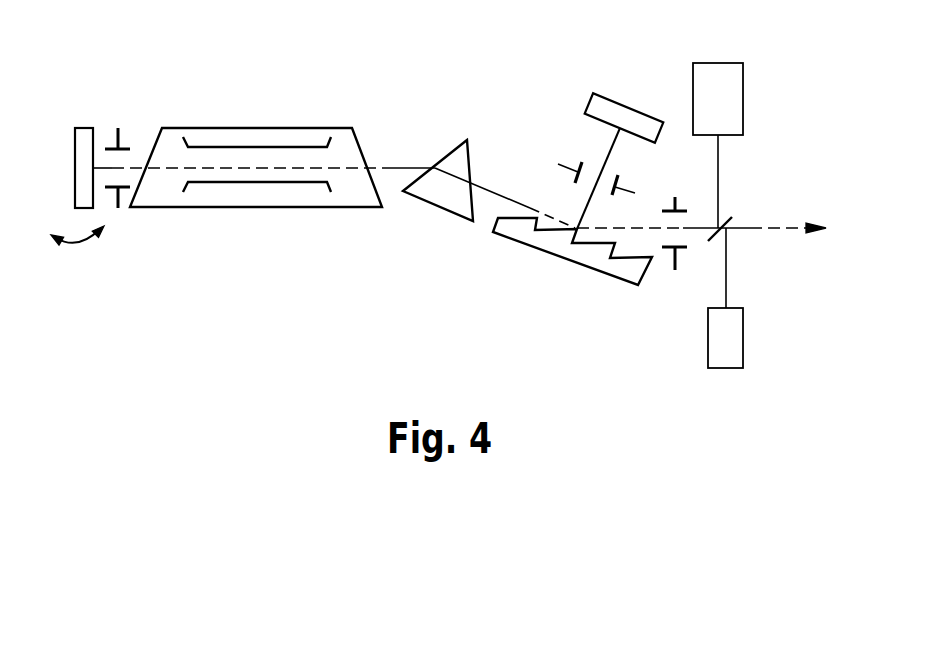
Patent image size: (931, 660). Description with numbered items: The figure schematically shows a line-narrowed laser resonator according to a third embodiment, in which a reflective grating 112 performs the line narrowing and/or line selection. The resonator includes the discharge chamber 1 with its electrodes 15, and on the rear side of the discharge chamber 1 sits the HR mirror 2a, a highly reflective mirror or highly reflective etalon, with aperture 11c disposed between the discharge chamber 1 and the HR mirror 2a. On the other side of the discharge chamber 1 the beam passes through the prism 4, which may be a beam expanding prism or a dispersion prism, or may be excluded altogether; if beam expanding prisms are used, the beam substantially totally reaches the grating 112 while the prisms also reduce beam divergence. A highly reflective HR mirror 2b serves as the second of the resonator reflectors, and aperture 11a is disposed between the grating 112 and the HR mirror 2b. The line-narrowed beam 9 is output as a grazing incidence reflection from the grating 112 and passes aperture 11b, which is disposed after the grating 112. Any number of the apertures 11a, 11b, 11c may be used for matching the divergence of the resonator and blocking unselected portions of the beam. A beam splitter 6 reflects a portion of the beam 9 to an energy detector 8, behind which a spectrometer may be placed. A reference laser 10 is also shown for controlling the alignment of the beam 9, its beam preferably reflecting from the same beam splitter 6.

The discharge chamber 1 is at (364, 200).
The HR mirror 2a is at (81, 128).
The HR mirror 2b is at (621, 105).
The prism 4 is at (456, 149).
The beam splitter 6 is at (727, 221).
The energy detector 8 is at (716, 62).
The line-narrowed beam 9 is at (816, 244).
The reference laser 10 is at (708, 341).
The aperture 11a is at (558, 164).
The aperture 11b is at (675, 258).
The aperture 11c is at (119, 128).
The electrodes 15 is at (333, 138).
The reflective grating 112 is at (567, 260).